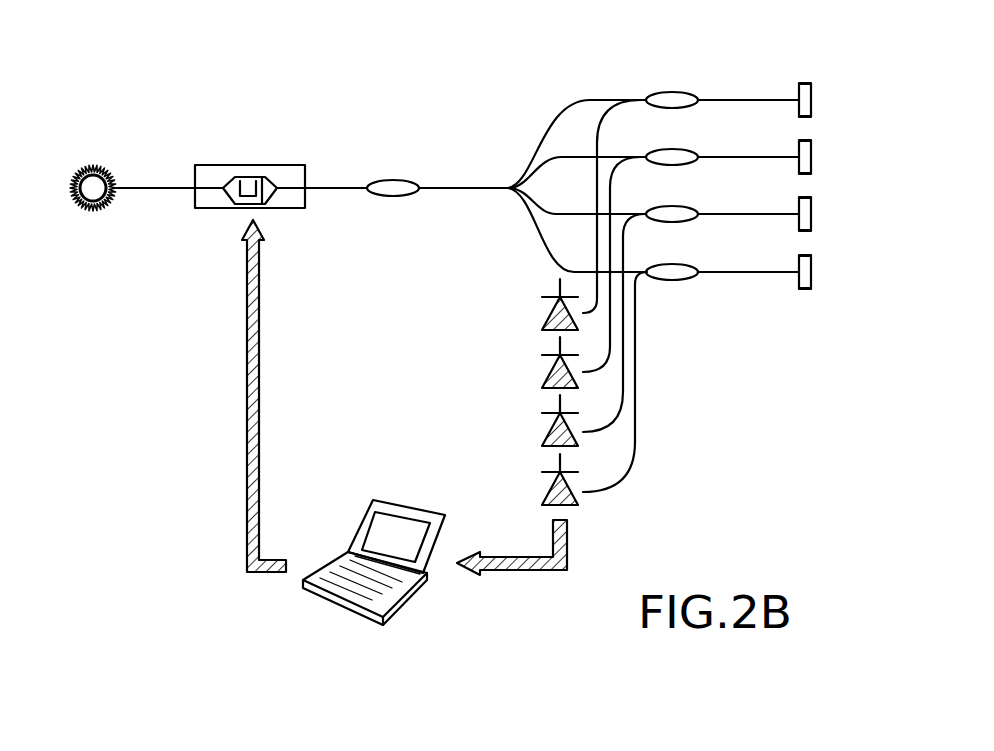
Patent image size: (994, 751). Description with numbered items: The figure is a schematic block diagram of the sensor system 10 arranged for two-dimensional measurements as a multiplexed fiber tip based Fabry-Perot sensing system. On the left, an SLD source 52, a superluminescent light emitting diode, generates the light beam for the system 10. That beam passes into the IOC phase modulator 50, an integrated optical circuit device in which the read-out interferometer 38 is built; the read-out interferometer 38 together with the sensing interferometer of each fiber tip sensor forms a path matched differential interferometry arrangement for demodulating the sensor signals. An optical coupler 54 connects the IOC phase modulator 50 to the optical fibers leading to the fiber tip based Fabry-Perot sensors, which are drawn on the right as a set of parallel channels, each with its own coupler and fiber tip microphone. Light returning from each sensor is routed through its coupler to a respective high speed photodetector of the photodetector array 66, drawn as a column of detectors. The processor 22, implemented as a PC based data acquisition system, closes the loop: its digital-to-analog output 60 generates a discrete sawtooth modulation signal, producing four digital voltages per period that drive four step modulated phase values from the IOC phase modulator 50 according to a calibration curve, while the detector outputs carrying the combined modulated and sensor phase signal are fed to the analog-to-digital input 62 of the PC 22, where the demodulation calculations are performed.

The system 10 is at (487, 73).
The processor 22 is at (357, 604).
The read-out interferometer 38 is at (236, 206).
The IOC phase modulator 50 is at (247, 165).
The SLD source 52 is at (96, 160).
The optical coupler 54 is at (392, 180).
The digital-to-analog output 60 is at (295, 576).
The analog-to-digital input 62 is at (447, 568).
The photodetector array 66 is at (668, 412).